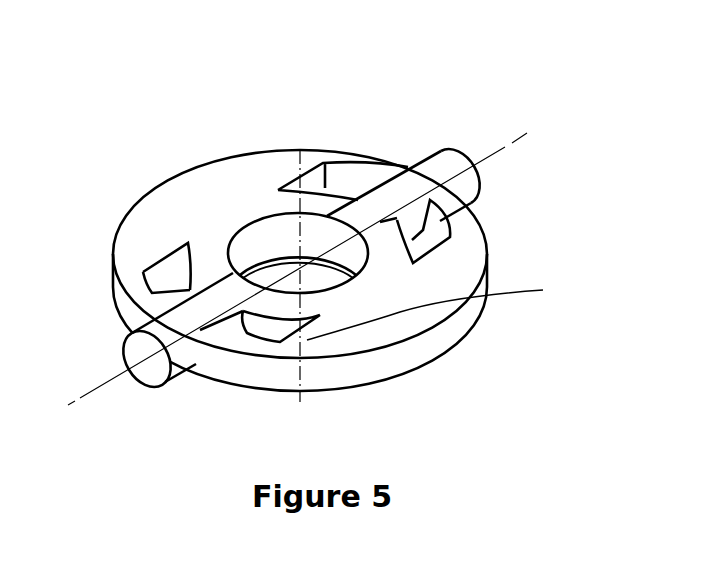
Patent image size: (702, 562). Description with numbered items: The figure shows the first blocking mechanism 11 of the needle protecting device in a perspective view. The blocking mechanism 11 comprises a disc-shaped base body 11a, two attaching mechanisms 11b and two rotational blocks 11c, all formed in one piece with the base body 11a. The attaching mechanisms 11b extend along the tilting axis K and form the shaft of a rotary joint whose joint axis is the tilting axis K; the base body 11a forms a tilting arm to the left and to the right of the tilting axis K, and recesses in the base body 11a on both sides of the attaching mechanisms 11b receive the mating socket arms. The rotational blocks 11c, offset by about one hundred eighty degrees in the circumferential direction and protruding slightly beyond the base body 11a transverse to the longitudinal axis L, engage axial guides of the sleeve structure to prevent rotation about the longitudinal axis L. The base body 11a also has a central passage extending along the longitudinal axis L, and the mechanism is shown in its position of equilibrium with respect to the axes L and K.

The first blocking mechanism 11 is at (150, 134).
The disc-shaped base body 11a is at (204, 184).
The attaching mechanism 11b is at (400, 188).
The rotational block 11c is at (450, 150).
The tilting axis K is at (500, 152).
The longitudinal axis L is at (441, 310).